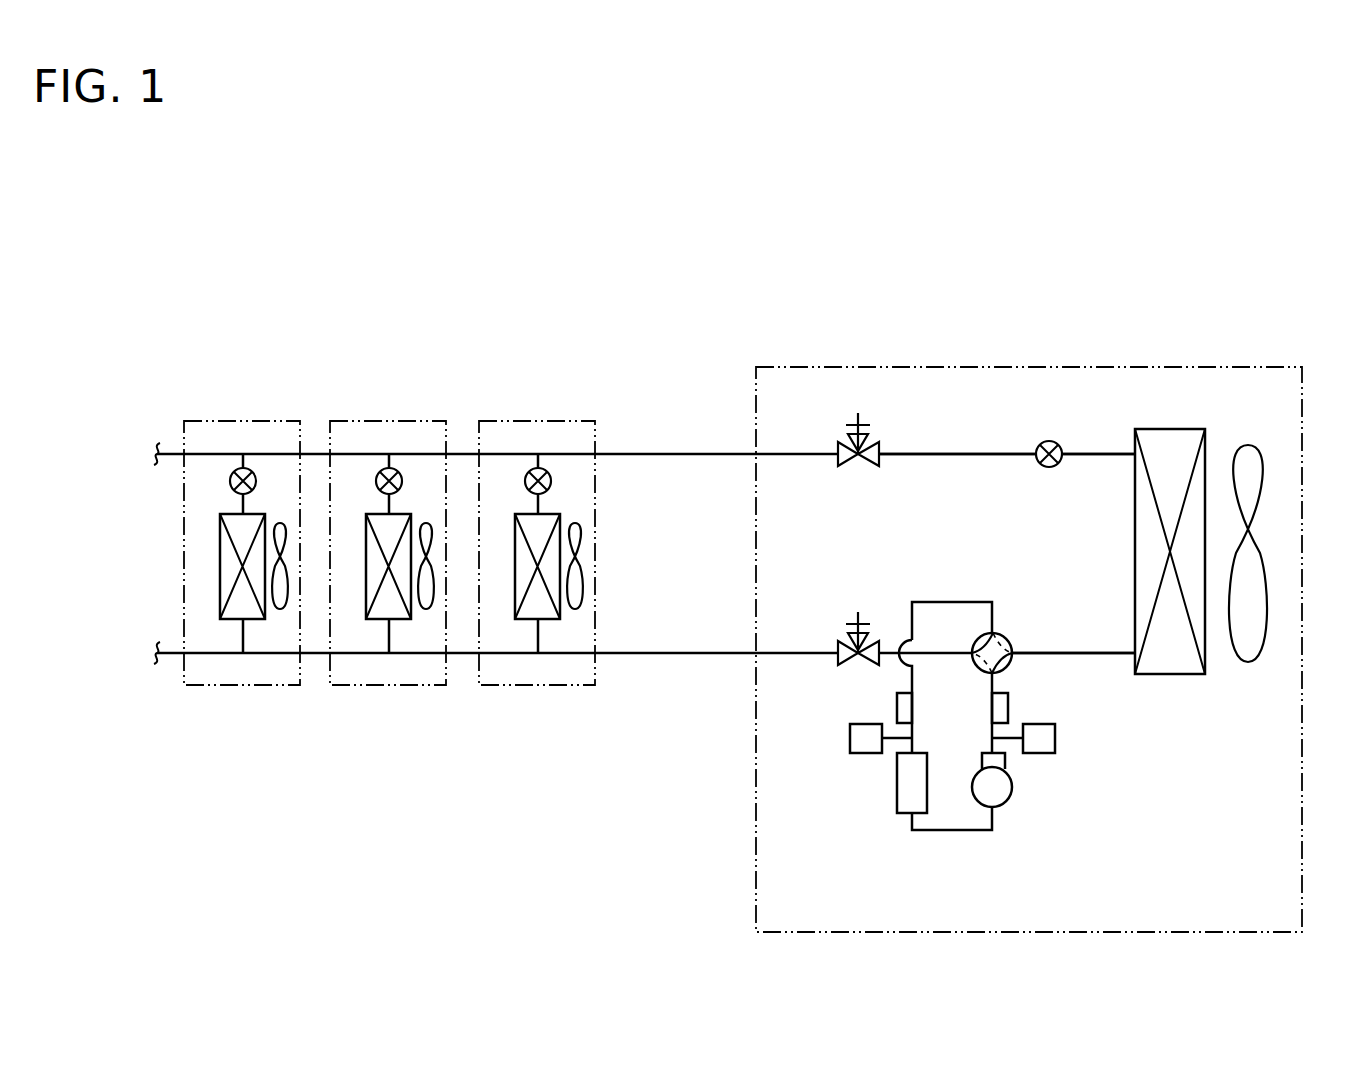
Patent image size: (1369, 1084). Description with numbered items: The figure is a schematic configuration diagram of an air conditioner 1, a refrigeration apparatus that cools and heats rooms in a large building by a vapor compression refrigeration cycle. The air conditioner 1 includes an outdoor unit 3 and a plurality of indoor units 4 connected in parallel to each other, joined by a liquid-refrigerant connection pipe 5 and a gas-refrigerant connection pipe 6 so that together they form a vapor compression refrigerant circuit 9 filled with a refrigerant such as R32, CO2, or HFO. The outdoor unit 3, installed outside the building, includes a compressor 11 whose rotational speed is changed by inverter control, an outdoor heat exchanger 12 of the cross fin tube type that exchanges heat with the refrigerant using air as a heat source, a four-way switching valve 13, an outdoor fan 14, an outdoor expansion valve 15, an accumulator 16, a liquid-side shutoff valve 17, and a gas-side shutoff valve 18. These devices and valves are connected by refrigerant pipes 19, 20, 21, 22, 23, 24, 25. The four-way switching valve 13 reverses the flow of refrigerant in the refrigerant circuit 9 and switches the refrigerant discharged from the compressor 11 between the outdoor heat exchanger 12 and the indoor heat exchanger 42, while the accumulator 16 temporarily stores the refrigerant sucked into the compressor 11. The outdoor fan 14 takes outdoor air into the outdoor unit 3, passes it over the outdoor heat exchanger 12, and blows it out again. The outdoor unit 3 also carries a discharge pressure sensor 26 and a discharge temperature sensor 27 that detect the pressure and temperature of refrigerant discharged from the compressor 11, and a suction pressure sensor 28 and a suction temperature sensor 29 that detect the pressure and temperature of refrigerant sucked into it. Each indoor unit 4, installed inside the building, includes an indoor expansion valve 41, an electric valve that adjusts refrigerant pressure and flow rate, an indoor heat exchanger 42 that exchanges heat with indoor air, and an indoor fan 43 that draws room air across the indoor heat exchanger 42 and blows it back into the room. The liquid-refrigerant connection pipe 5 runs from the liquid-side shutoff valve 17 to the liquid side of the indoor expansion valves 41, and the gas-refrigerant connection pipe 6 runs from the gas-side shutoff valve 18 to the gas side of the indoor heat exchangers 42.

The air conditioner 1 is at (429, 314).
The outdoor unit 3 is at (1162, 362).
The indoor unit 4 is at (496, 420).
The liquid-refrigerant connection pipe 5 is at (641, 453).
The gas-refrigerant connection pipe 6 is at (667, 655).
The refrigerant circuit 9 is at (713, 418).
The compressor 11 is at (1003, 795).
The outdoor heat exchanger 12 is at (1170, 665).
The four-way switching valve 13 is at (1005, 640).
The outdoor fan 14 is at (1262, 458).
The outdoor expansion valve 15 is at (1047, 440).
The accumulator 16 is at (897, 778).
The liquid-side shutoff valve 17 is at (856, 413).
The gas-side shutoff valve 18 is at (856, 612).
The refrigerant pipe 19 is at (992, 730).
The refrigerant pipe 20 is at (1092, 652).
The refrigerant pipe 21 is at (1092, 453).
The refrigerant pipe 22 is at (960, 453).
The refrigerant pipe 23 is at (960, 602).
The refrigerant pipe 24 is at (940, 655).
The refrigerant pipe 25 is at (950, 830).
The discharge pressure sensor 26 is at (1058, 738).
The discharge temperature sensor 27 is at (1010, 705).
The suction pressure sensor 28 is at (850, 738).
The suction temperature sensor 29 is at (897, 707).
The indoor expansion valve 41 is at (229, 482).
The indoor heat exchanger 42 is at (222, 566).
The indoor fan 43 is at (282, 612).